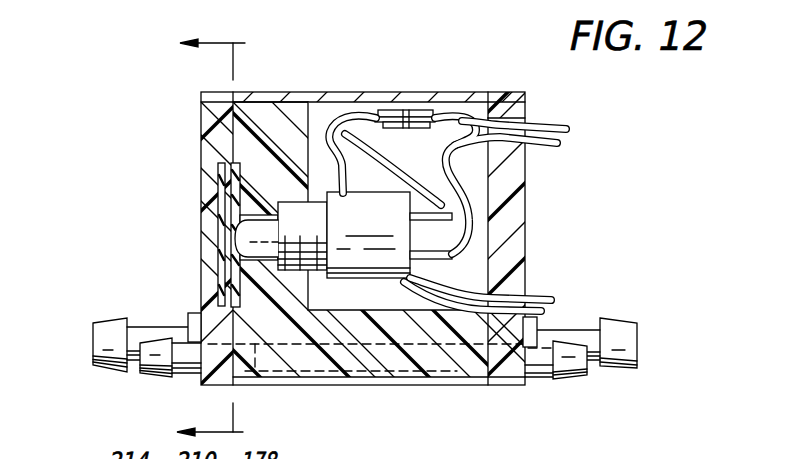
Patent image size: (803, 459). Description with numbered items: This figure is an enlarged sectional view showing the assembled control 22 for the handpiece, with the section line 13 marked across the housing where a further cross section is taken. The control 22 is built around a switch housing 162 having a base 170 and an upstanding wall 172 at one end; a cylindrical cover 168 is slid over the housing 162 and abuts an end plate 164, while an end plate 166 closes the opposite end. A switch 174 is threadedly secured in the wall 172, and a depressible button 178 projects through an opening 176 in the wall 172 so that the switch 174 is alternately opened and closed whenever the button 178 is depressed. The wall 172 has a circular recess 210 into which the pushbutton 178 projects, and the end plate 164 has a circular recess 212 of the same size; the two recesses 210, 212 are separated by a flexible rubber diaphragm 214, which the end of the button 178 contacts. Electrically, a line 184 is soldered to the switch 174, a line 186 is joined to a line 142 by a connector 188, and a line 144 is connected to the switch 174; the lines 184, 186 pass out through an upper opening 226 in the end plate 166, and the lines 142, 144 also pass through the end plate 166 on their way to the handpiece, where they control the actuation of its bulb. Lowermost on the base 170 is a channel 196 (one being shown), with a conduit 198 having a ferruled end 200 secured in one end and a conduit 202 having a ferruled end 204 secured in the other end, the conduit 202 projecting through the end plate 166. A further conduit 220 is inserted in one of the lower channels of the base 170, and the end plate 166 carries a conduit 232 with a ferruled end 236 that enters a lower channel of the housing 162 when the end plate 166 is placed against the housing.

The section line 13- 13 is at (192, 237).
The control 22 is at (466, 397).
The line 142 is at (538, 297).
The line 144 is at (560, 305).
The switch housing 162 is at (334, 309).
The end plate 164 is at (196, 142).
The end plate 166 is at (533, 234).
The cylindrical cover 168 is at (447, 99).
The base 170 is at (362, 337).
The upstanding wall 172 is at (298, 107).
The switch 174 is at (389, 235).
The opening 176 is at (245, 258).
The depressible button 178 is at (217, 228).
The line 184 is at (543, 124).
The line 186 is at (540, 146).
The connector 188 is at (413, 113).
The channels 196 is at (295, 357).
The conduits 198 is at (186, 370).
The ferruled ends 200 is at (160, 374).
The conduits 202 is at (544, 355).
The ferruled end 204 is at (588, 378).
The circular recess 210 is at (237, 175).
The circular recess 212 is at (220, 182).
The flexible rubber diaphragm 214 is at (230, 279).
The conduit 220 is at (143, 326).
The upper opening 226 is at (507, 110).
The conduit 232 is at (580, 330).
The ferruled end 236 is at (637, 346).